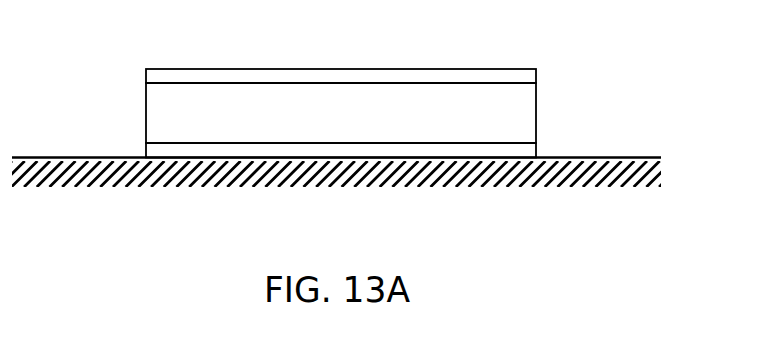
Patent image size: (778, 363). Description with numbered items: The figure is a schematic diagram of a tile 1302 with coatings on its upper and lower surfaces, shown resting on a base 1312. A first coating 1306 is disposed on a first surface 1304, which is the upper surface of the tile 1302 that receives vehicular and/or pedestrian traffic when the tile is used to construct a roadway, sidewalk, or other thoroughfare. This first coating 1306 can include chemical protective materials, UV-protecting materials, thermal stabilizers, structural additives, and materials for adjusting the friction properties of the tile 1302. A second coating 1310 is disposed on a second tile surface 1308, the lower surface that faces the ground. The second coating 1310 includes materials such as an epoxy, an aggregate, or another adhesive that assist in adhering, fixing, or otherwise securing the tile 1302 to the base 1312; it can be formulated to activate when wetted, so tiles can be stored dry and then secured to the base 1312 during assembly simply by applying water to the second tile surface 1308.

The tile 1302 is at (242, 107).
The first surface 1304 is at (285, 83).
The first coating 1306 is at (427, 77).
The second tile surface 1308 is at (215, 143).
The second coating 1310 is at (473, 153).
The base 1312 is at (566, 210).